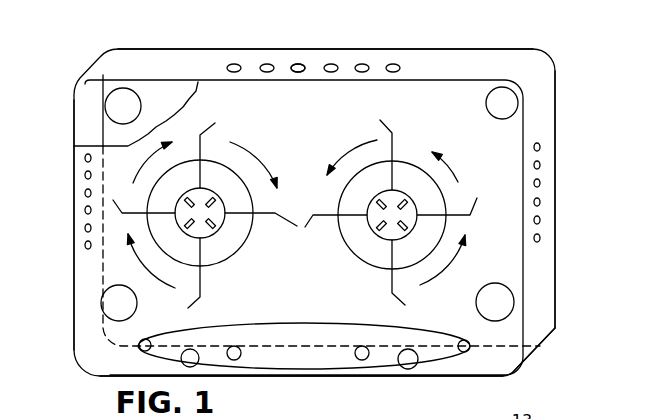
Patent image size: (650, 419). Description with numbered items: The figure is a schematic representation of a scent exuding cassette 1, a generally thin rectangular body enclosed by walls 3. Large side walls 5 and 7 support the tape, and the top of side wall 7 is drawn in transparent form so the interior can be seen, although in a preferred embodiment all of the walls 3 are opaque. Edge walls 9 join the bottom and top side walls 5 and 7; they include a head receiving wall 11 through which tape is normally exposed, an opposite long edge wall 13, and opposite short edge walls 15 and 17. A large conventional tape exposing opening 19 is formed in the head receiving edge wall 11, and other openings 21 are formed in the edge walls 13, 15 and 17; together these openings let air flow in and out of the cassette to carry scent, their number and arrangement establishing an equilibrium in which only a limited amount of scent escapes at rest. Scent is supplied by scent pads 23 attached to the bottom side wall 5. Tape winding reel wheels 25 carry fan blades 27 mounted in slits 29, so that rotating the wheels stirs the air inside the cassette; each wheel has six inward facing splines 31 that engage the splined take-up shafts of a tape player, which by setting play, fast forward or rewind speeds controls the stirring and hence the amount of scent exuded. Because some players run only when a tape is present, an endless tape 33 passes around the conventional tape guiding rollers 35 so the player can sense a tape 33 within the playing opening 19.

The scent exuding cassette 1 is at (570, 203).
The walls 3 is at (68, 316).
The bottom side wall 5 is at (163, 100).
The top side wall 7 is at (250, 100).
The edge walls 9 is at (535, 323).
The head receiving wall 11 is at (113, 358).
The long edge wall 13 is at (408, 67).
The short edge wall 15 is at (543, 83).
The short edge wall 17 is at (88, 106).
The tape exposing opening 19 is at (291, 356).
The openings 21 is at (300, 67).
The scent pads 23 is at (490, 101).
The tape winding reel wheels 25 is at (253, 235).
The fan blades 27 is at (276, 212).
The slits 29 is at (200, 155).
The splines 31 is at (382, 237).
The endless tape 33 is at (258, 325).
The tape guiding rollers 35 is at (467, 342).